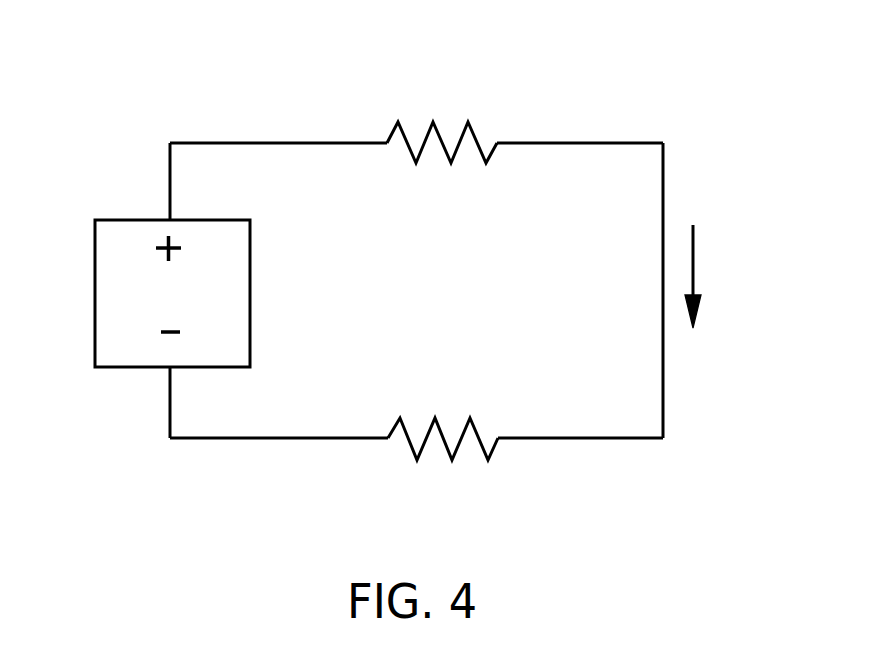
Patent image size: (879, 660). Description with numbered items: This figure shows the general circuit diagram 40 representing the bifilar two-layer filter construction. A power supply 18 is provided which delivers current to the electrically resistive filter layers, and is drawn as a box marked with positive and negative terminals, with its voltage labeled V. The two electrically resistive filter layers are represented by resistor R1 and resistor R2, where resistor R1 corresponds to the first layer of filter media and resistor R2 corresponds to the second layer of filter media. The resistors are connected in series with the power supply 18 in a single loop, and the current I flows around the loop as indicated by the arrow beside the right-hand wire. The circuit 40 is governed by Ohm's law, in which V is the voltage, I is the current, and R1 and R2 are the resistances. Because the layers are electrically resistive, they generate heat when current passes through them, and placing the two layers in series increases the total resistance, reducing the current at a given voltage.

The circuit diagram 40 is at (424, 273).
The power supply 18 is at (136, 325).
The resistor R1 is at (442, 172).
The resistor R2 is at (443, 465).
The voltage V is at (68, 299).
The current I is at (707, 276).